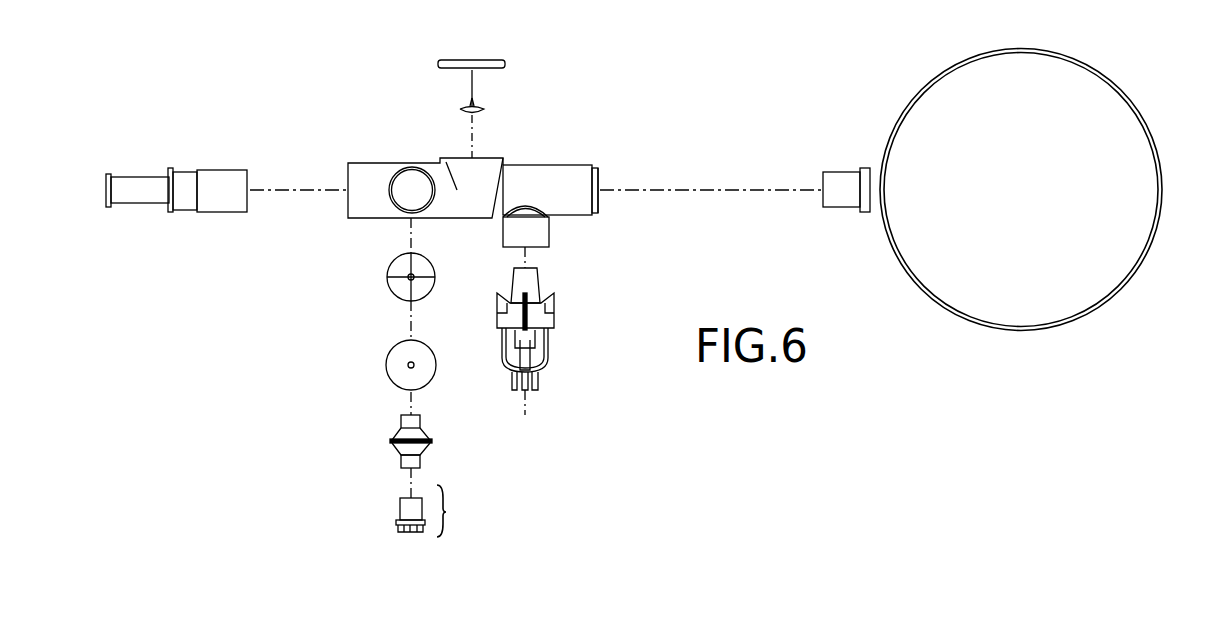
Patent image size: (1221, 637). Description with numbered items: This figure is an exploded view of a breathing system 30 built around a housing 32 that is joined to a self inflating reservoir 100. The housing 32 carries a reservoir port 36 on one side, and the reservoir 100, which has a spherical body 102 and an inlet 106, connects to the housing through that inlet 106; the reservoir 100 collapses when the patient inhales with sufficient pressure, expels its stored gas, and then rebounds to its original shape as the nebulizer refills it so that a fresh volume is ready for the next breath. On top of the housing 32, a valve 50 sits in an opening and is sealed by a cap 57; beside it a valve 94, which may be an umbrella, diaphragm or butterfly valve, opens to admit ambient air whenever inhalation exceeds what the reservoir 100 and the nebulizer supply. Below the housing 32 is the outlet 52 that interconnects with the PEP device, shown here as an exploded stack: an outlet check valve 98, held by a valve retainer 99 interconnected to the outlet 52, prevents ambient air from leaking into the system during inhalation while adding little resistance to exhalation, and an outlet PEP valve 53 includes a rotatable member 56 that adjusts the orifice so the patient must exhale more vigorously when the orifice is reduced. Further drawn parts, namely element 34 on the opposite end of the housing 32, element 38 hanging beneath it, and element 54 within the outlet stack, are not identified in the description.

The breathing system 30 is at (694, 70).
The housing 32 is at (570, 175).
The inlet connector 34 is at (150, 190).
The reservoir port 36 is at (600, 203).
The valve assembly 38 is at (548, 343).
The valve 50 is at (498, 177).
The outlet 52 is at (411, 176).
The outlet PEP valve 53 is at (446, 512).
The piston 54 is at (400, 453).
The member 56 is at (397, 525).
The cap 57 is at (487, 60).
The valve 94 is at (480, 108).
The outlet check valve 98 is at (425, 375).
The valve retainer 99 is at (424, 287).
The self inflating reservoir 100 is at (1143, 113).
The spherical body 102 is at (1075, 297).
The inlet 106 is at (823, 177).